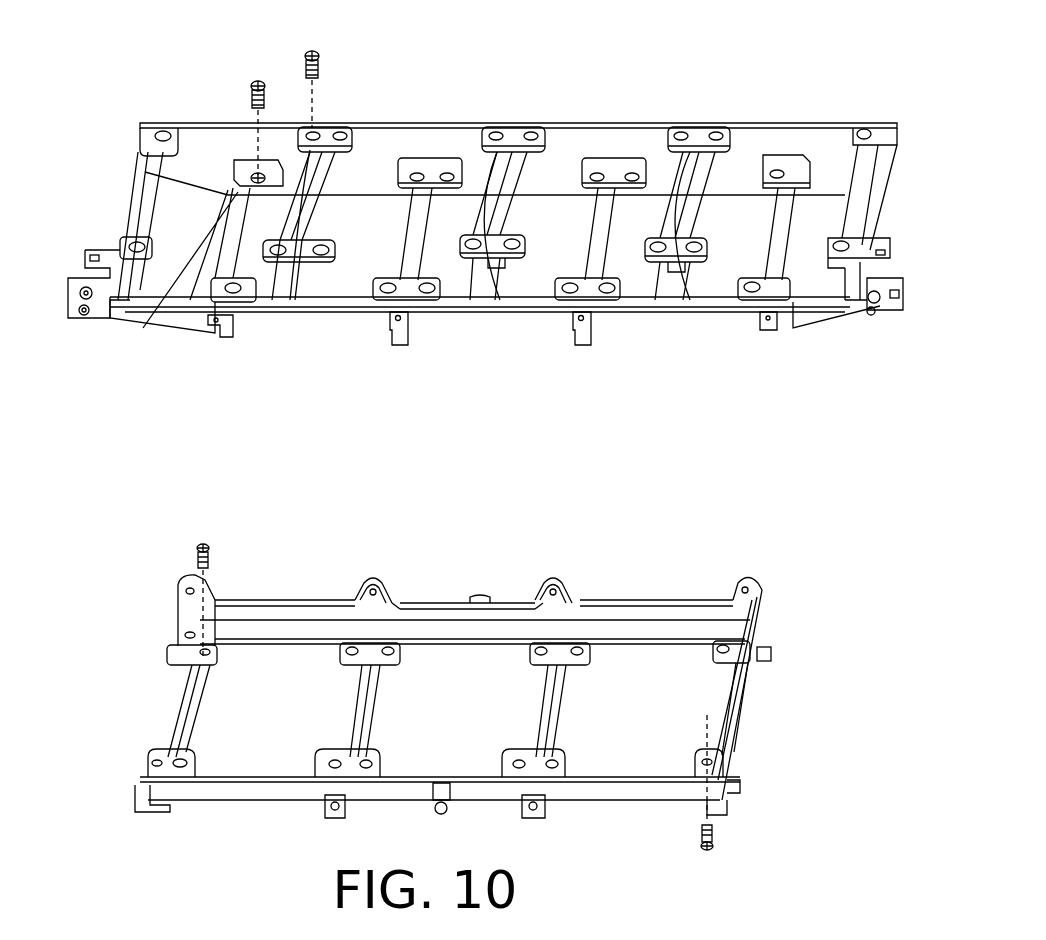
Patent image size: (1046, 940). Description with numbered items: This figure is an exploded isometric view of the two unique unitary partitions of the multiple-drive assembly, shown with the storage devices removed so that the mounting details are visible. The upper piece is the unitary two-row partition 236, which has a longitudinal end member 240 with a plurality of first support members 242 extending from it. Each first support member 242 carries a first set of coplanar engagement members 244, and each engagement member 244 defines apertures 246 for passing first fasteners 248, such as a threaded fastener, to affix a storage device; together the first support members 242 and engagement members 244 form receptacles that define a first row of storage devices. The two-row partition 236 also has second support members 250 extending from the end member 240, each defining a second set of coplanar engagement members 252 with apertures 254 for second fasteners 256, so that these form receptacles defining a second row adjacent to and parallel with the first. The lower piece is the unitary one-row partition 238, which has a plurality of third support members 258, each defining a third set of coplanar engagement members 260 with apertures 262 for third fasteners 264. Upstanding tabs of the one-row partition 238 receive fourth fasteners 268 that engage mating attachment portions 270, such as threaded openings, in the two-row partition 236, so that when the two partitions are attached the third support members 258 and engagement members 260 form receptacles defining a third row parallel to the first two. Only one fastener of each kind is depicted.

The unitary two-row partition 236 is at (895, 188).
The unitary one-row partition 238 is at (755, 686).
The longitudinal end member 240 is at (378, 122).
The first support members 242 is at (128, 182).
The first engagement members 244 is at (127, 184).
The apertures 246 is at (146, 247).
The first fasteners 248 is at (315, 60).
The second support members 250 is at (805, 280).
The second engagement members 252 is at (232, 282).
The apertures 254 is at (246, 175).
The second fasteners 256 is at (257, 88).
The third support members 258 is at (165, 748).
The third engagement members 260 is at (188, 648).
The apertures 262 is at (728, 652).
The third fasteners 264 is at (215, 551).
The fourth fasteners 268 is at (712, 832).
The mating attachment portions 270 is at (218, 337).